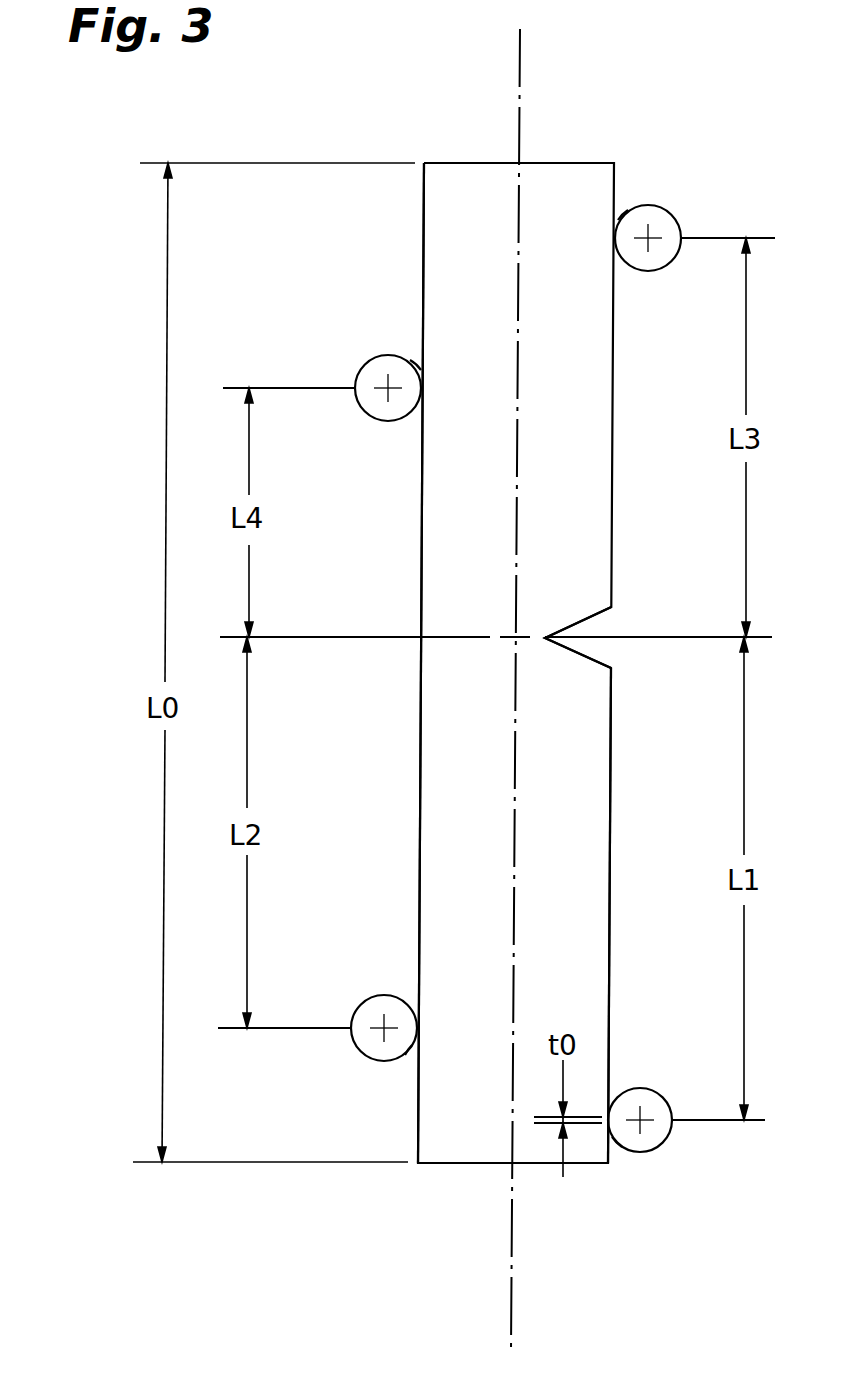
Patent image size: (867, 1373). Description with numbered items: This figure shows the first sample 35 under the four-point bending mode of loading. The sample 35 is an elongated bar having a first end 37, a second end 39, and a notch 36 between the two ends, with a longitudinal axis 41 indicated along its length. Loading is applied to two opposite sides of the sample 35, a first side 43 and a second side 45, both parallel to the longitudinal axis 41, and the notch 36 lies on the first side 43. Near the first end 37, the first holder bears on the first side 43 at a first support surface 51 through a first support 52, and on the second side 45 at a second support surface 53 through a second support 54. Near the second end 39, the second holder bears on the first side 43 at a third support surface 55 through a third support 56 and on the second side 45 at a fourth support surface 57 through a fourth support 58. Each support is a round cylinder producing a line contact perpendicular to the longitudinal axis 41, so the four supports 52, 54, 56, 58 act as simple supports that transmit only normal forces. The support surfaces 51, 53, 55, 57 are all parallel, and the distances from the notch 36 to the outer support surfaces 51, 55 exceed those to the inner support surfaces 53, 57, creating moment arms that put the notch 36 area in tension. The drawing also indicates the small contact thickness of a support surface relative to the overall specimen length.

The first sample 35 is at (575, 443).
The notch 36 is at (600, 628).
The first end 37 is at (462, 1155).
The second end 39 is at (585, 175).
The longitudinal axis 41 is at (522, 105).
The first side 43 is at (610, 757).
The second side 45 is at (420, 767).
The first support surface 51 is at (615, 1157).
The first support 52 is at (650, 1090).
The second support surface 53 is at (410, 1063).
The second support 54 is at (362, 1000).
The third support surface 55 is at (622, 198).
The third support 56 is at (672, 208).
The fourth support surface 57 is at (415, 355).
The fourth support 58 is at (368, 365).